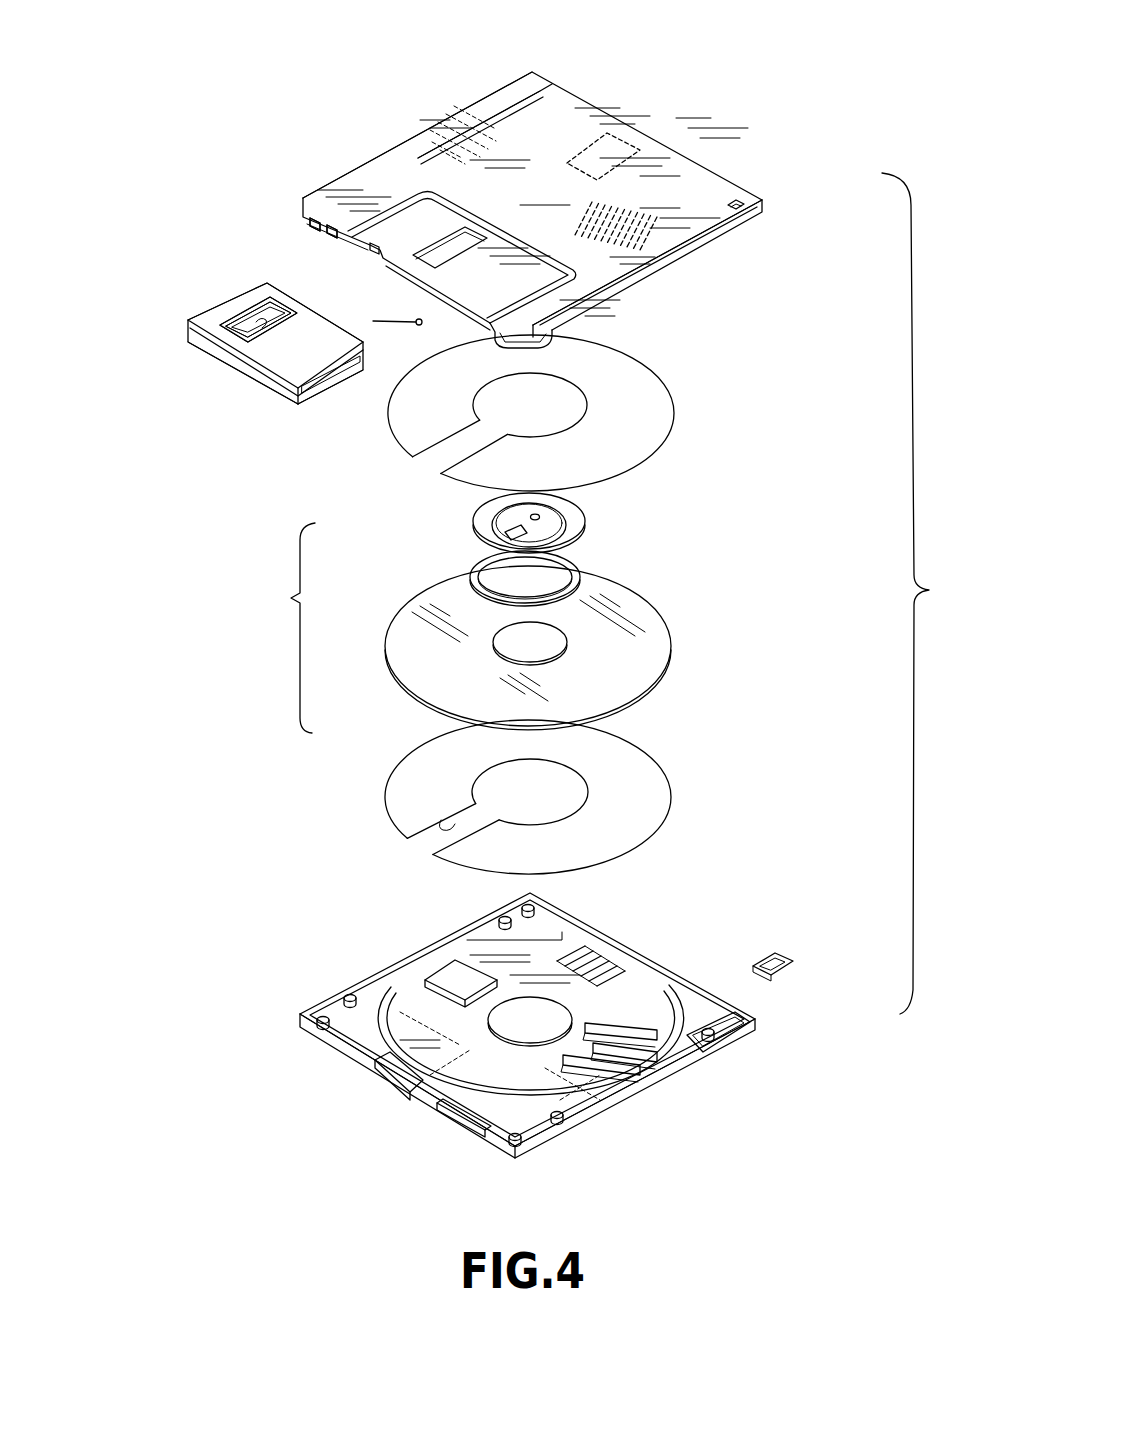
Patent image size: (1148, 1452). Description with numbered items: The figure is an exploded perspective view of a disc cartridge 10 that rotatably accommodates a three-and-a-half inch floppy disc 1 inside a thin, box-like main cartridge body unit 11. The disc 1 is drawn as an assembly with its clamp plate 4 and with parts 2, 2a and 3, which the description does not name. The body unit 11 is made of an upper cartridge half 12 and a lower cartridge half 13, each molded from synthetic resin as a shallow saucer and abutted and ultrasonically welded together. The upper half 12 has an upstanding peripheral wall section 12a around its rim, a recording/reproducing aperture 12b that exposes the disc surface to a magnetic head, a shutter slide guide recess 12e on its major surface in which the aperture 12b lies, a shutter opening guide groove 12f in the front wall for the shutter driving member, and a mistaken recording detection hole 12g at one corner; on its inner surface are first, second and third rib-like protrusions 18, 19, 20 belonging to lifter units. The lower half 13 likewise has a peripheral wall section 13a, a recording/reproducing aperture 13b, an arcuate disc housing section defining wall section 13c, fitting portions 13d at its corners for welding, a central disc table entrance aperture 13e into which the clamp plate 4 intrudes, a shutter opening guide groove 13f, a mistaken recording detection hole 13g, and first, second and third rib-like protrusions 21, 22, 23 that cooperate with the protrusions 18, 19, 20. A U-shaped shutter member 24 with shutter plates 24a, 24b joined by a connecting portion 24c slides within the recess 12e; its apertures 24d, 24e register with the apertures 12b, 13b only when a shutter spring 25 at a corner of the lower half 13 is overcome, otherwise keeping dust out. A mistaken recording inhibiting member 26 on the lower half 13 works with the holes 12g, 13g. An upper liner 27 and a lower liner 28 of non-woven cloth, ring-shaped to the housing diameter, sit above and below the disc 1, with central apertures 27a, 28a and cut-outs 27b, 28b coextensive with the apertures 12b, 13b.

The disc 1 is at (287, 628).
The disc 2 is at (405, 648).
The center hole of disc 2a is at (500, 648).
The ring 3 is at (482, 583).
The clamp plate 4 is at (478, 525).
The disc cartridge 10 is at (188, 153).
The main cartridge body unit 11 is at (939, 603).
The upper cartridge half 12 is at (770, 200).
The upstanding peripheral wall section 12a is at (668, 272).
The recording/reproducing aperture 12b is at (443, 240).
The shutter slide guide recess 12e is at (447, 220).
The shutter opening guide groove 12f is at (350, 250).
The mistaken recording detection hole 12g is at (740, 203).
The lower cartridge half 13 is at (780, 992).
The upstanding peripheral wall section 13a is at (727, 1047).
The recording/reproducing aperture 13b is at (387, 1065).
The disc housing section defining wall section 13c is at (503, 1093).
The fitting portions 13d is at (547, 902).
The disc table entrance aperture 13e is at (543, 1030).
The shutter opening guide groove 13f is at (447, 1123).
The mistaken recording detection hole 13g is at (765, 1025).
The first rib-like protrusions 18 is at (500, 130).
The second rib-like protrusions 19 is at (618, 150).
The third rib-like protrusions 20 is at (640, 182).
The first rib-like protrusions 21 is at (453, 977).
The second rib-like protrusions 22 is at (623, 960).
The third rib-like protrusions 23 is at (648, 1022).
The shutter member 24 is at (192, 361).
The shutter plate 24a is at (215, 310).
The shutter plate 24b is at (317, 403).
The connecting portion 24c is at (247, 372).
The aperture 24d is at (267, 323).
The aperture 24e is at (260, 313).
The shutter spring 25 is at (420, 328).
The mistaken recording inhibiting member 26 is at (795, 955).
The upper liner 27 is at (650, 420).
The recording/reproducing aperture 27a is at (577, 400).
The cut-out 27b is at (450, 460).
The lower liner 28 is at (655, 800).
The recording/reproducing aperture 28a is at (573, 785).
The cut-out 28b is at (452, 815).